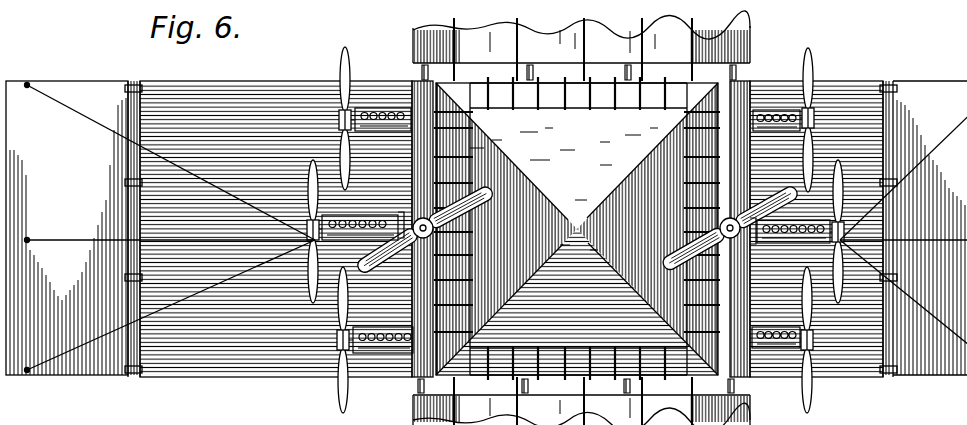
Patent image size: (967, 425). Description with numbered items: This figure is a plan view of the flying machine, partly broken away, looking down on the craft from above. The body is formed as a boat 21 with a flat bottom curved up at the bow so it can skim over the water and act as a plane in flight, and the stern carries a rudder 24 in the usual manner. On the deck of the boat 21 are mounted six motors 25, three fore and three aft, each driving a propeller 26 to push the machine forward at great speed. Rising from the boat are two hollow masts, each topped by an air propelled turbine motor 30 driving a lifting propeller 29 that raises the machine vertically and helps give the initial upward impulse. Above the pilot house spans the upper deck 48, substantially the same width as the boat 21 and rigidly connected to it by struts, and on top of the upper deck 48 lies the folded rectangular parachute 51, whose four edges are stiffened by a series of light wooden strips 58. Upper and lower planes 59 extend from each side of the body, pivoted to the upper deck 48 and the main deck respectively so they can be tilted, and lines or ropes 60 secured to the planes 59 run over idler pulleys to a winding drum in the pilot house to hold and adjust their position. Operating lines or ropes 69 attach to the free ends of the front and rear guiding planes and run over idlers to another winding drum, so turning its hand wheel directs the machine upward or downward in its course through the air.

The boat 21 is at (290, 84).
The rudder 24 is at (893, 225).
The motors 25 is at (396, 132).
The propellers 26 is at (341, 56).
The propeller 29 is at (360, 276).
The air propelled turbine motor 30 is at (404, 216).
The upper deck 48 is at (424, 92).
The parachute 51 is at (577, 229).
The light wooden strips 58 is at (447, 190).
The upper and lower planes 59 is at (412, 42).
The lines or ropes 60 is at (508, 72).
The operating lines or ropes 69 is at (96, 122).